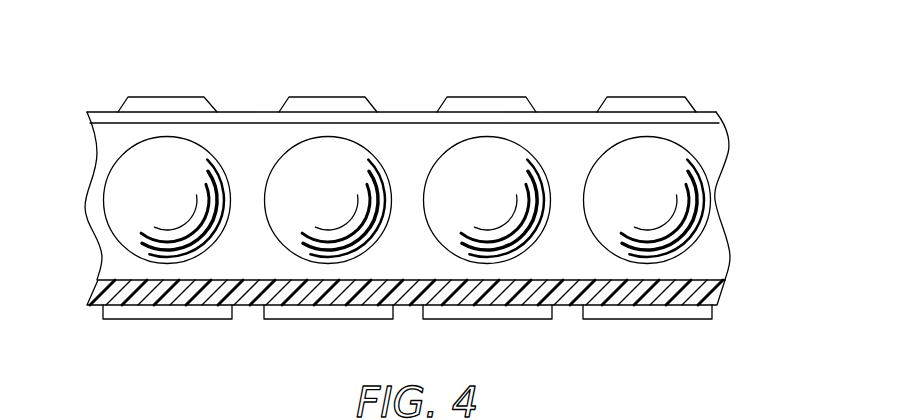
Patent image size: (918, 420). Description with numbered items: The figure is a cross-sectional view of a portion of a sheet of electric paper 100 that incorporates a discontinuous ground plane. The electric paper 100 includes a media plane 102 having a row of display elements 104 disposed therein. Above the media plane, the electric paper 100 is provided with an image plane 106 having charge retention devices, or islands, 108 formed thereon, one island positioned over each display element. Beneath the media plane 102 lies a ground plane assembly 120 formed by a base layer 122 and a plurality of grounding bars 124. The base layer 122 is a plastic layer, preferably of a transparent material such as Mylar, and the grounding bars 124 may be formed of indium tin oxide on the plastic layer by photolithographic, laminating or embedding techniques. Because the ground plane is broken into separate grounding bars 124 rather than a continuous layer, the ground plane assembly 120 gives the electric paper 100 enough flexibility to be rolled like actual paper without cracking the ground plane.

The electric paper 100 is at (403, 51).
The media plane 102 is at (88, 210).
The display elements 104 is at (187, 210).
The image plane 106 is at (90, 120).
The charge retention devices 108 is at (300, 102).
The ground plane assembly 120 is at (795, 310).
The base layer 122 is at (92, 298).
The grounding bars 124 is at (290, 313).